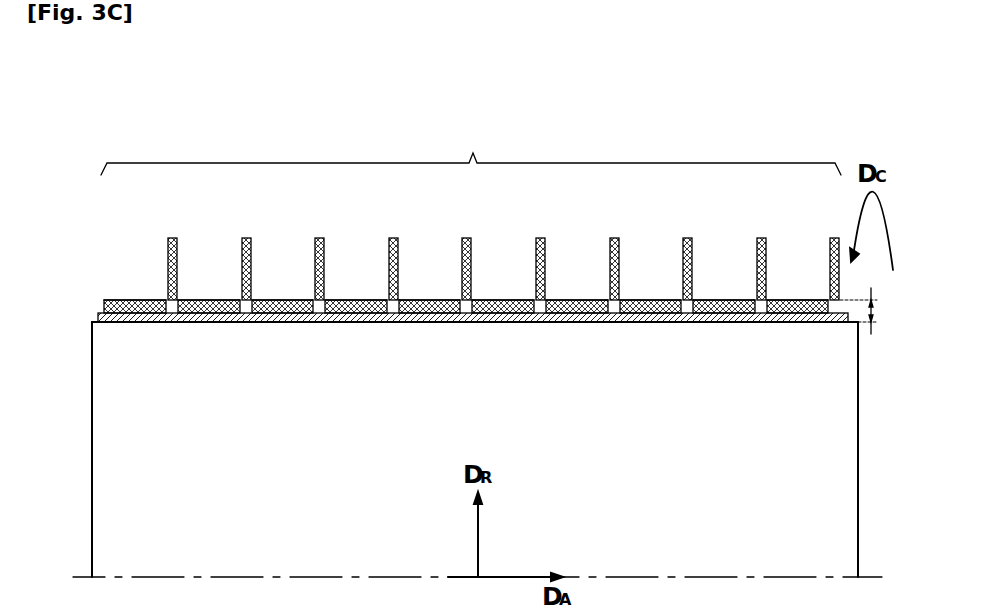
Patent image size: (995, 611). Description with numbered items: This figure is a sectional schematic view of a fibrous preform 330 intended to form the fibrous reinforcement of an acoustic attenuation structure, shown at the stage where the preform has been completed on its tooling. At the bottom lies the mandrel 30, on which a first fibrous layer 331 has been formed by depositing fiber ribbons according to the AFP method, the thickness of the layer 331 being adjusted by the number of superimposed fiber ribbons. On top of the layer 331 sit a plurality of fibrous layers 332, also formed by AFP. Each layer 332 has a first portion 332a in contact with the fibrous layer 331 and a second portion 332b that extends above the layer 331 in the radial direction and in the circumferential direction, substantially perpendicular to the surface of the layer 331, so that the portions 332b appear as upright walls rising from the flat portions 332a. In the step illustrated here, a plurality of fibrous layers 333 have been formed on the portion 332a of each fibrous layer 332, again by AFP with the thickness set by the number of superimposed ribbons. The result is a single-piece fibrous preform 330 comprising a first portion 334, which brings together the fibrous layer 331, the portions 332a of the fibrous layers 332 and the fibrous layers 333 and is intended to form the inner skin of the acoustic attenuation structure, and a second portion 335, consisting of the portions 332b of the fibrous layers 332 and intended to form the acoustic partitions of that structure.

The mandrel 30 is at (92, 460).
The fibrous preform 330 is at (746, 134).
The first fibrous layer 331 is at (98, 314).
The fibrous layers 332 is at (475, 272).
The first portion 332a is at (134, 323).
The second portion 332b is at (177, 262).
The fibrous layers 333 is at (138, 300).
The first portion 334 is at (873, 312).
The second portion 335 is at (471, 149).